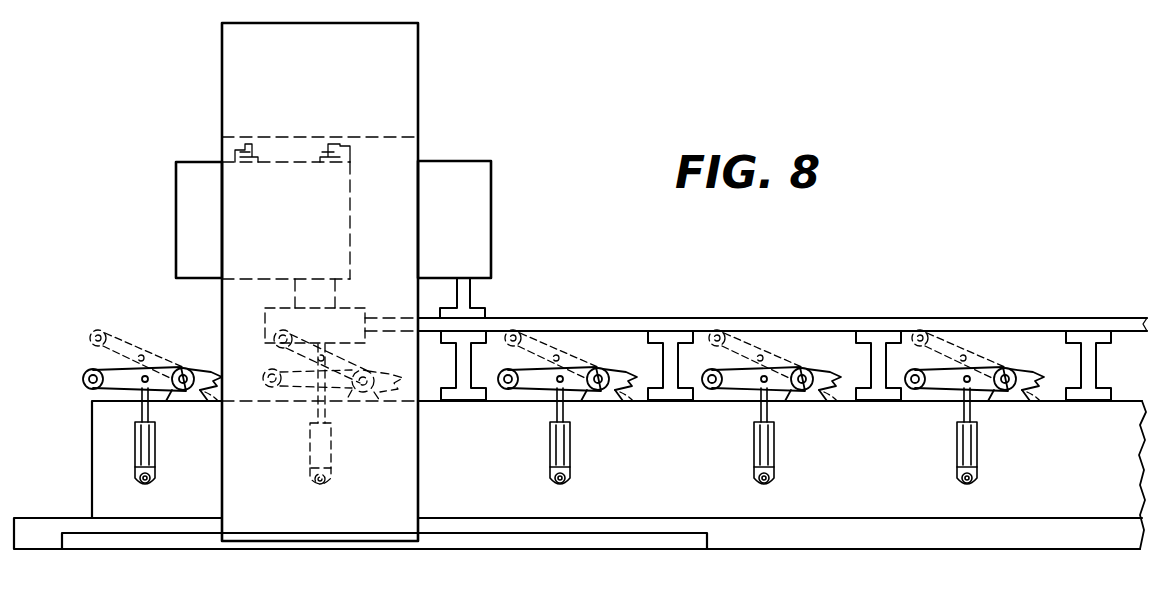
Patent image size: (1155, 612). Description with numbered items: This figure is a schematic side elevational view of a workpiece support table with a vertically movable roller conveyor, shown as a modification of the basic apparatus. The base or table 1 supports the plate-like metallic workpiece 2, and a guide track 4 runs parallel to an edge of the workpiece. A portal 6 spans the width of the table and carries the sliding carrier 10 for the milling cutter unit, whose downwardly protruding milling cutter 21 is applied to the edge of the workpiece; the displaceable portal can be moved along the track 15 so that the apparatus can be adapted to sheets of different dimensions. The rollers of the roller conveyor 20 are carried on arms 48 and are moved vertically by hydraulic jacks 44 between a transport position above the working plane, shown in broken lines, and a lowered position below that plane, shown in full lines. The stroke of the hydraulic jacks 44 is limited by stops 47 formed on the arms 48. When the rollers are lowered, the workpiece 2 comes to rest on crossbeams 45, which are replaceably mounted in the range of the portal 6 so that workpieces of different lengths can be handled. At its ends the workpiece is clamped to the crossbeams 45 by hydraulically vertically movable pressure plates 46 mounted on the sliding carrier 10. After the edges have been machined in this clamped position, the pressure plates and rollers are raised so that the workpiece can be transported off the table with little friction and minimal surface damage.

The table 1 is at (880, 487).
The workpiece 2 is at (1100, 318).
The track 4 is at (815, 527).
The portal 6 is at (377, 112).
The sliding carrier 10 is at (205, 190).
The track 15 is at (542, 540).
The roller conveyor 20 is at (87, 372).
The milling cutter 21 is at (287, 312).
The hydraulic jacks 44 is at (146, 440).
The crossbeams 45 is at (672, 350).
The pressure plates 46 is at (475, 313).
The stops 47 is at (214, 376).
The arms 48 is at (132, 380).